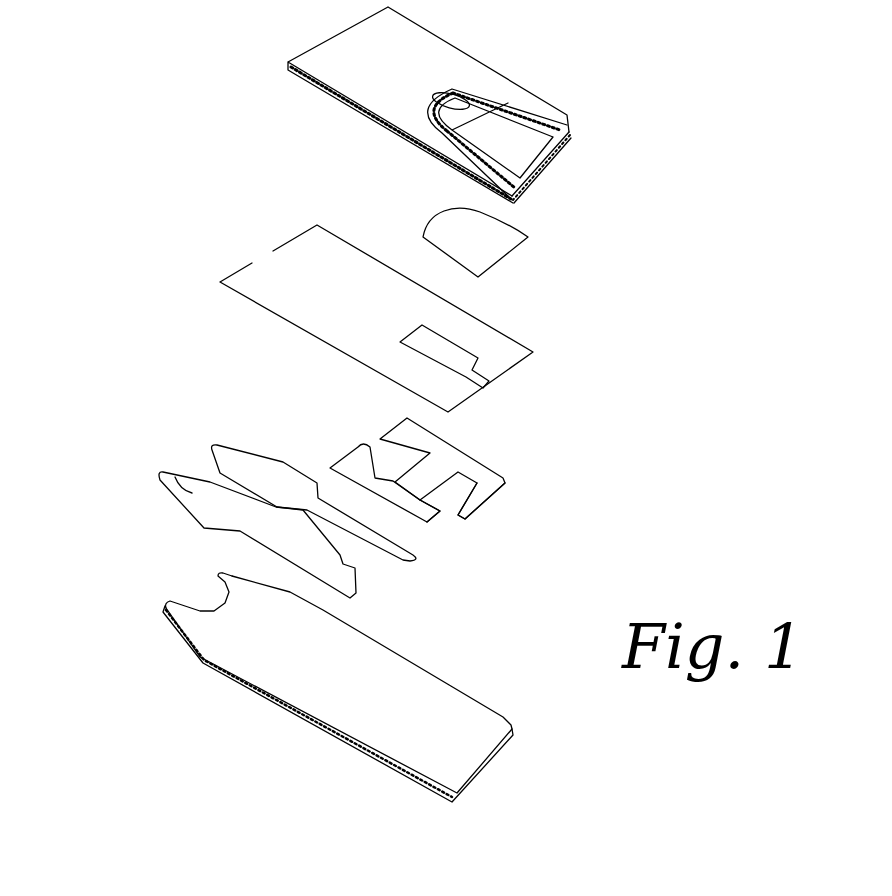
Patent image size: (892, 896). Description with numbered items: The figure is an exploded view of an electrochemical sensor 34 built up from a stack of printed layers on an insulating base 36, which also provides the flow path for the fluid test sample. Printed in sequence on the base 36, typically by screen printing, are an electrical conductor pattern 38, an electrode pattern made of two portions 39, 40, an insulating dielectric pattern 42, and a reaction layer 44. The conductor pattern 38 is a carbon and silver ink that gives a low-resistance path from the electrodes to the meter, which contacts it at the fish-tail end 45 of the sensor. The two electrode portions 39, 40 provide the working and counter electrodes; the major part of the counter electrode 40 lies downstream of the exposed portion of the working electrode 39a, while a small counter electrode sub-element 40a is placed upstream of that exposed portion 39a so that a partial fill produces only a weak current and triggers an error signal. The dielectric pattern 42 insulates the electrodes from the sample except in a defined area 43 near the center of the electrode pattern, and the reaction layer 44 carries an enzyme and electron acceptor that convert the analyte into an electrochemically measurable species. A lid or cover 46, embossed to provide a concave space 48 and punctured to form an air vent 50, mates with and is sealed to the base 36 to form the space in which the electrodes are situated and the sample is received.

The sensor 34 is at (692, 215).
The insulating base 36 is at (512, 725).
The electrical conductor pattern 38 is at (228, 460).
The electrode pattern portion (working electrode) 39 is at (355, 457).
The exposed portion of the working electrode 39a is at (436, 509).
The electrode pattern portion (counter electrode) 40 is at (470, 450).
The counter electrode sub-element 40a is at (480, 513).
The insulating (dielectric) pattern 42 is at (288, 262).
The defined area near the center of the electrode pattern 43 is at (470, 358).
The reaction layer 44 is at (493, 238).
The fish-tail end 45 is at (200, 597).
The lid or cover 46 is at (333, 67).
The concave space 48 is at (545, 150).
The air vent 50 is at (450, 97).